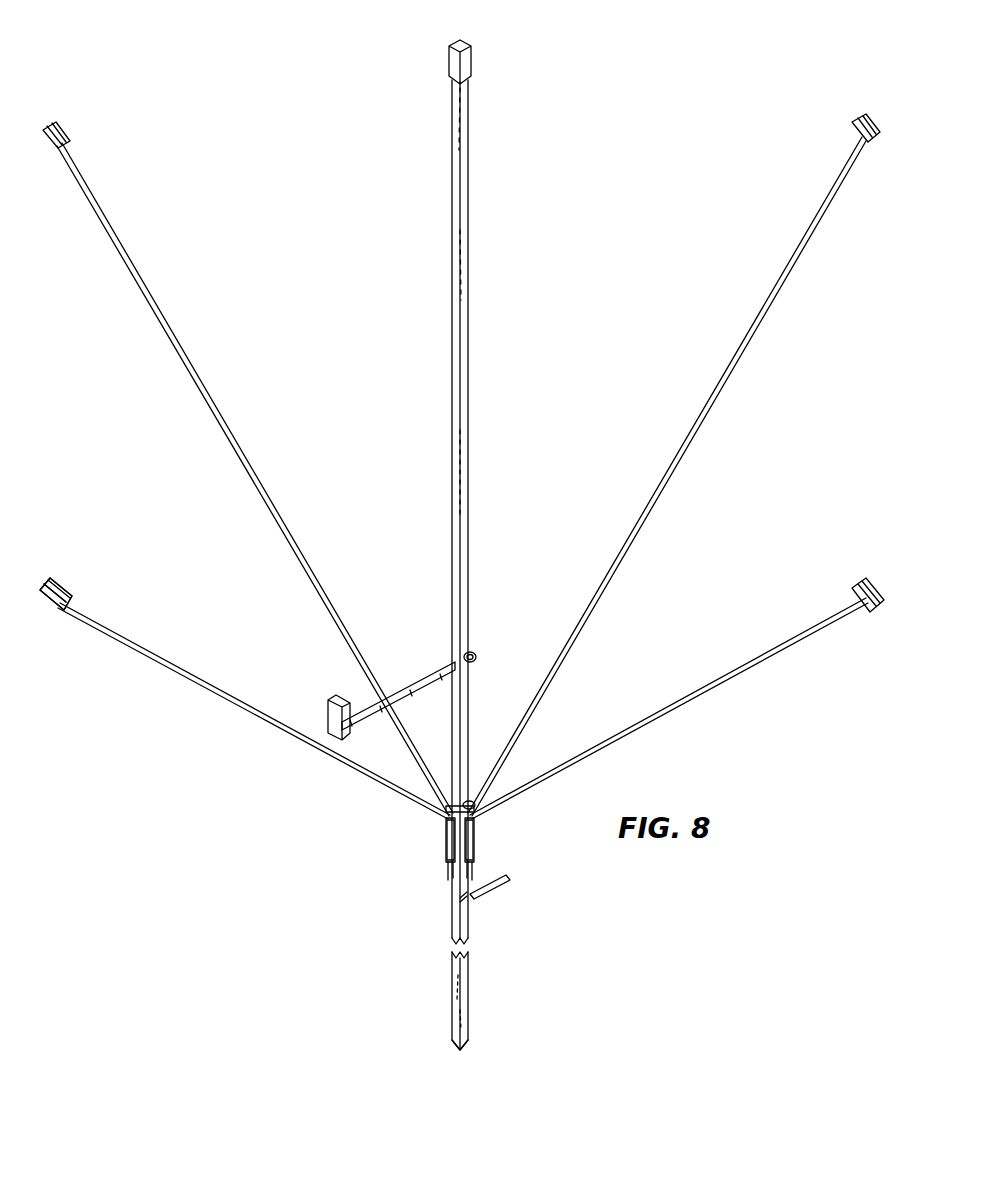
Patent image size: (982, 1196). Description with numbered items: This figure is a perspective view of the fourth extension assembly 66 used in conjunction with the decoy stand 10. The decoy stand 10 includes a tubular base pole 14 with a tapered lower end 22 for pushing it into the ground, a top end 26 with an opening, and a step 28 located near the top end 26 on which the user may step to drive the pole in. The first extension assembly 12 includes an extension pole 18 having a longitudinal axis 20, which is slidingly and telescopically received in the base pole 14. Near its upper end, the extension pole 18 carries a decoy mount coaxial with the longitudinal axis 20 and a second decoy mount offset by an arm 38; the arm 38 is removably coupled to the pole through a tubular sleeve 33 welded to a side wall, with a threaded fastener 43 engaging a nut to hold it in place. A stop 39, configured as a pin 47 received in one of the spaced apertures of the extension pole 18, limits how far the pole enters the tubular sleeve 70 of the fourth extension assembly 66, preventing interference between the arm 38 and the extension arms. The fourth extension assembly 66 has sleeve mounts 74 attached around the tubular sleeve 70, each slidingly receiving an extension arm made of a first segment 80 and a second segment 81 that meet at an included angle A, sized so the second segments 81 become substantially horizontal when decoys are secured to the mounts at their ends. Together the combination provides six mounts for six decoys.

The decoy stand 10 is at (217, 223).
The first extension assembly 12 is at (475, 479).
The tubular base pole 14 is at (470, 987).
The extension pole 18 is at (470, 372).
The longitudinal axis 20 is at (460, 0).
The tapered lower end 22 is at (466, 1050).
The top end 26 is at (472, 898).
The step 28 is at (510, 878).
The tubular sleeve 33 is at (435, 628).
The arm 38 is at (405, 685).
The stop 39 is at (489, 747).
The threaded fastener 43 is at (479, 656).
The pin 47 is at (475, 803).
The fourth extension assembly 66 is at (150, 580).
The tubular sleeve 70 is at (446, 808).
The sleeve mounts 74 is at (452, 845).
The first segment 80 is at (452, 876).
The second segment 81 is at (257, 750).
The included angle A is at (422, 842).